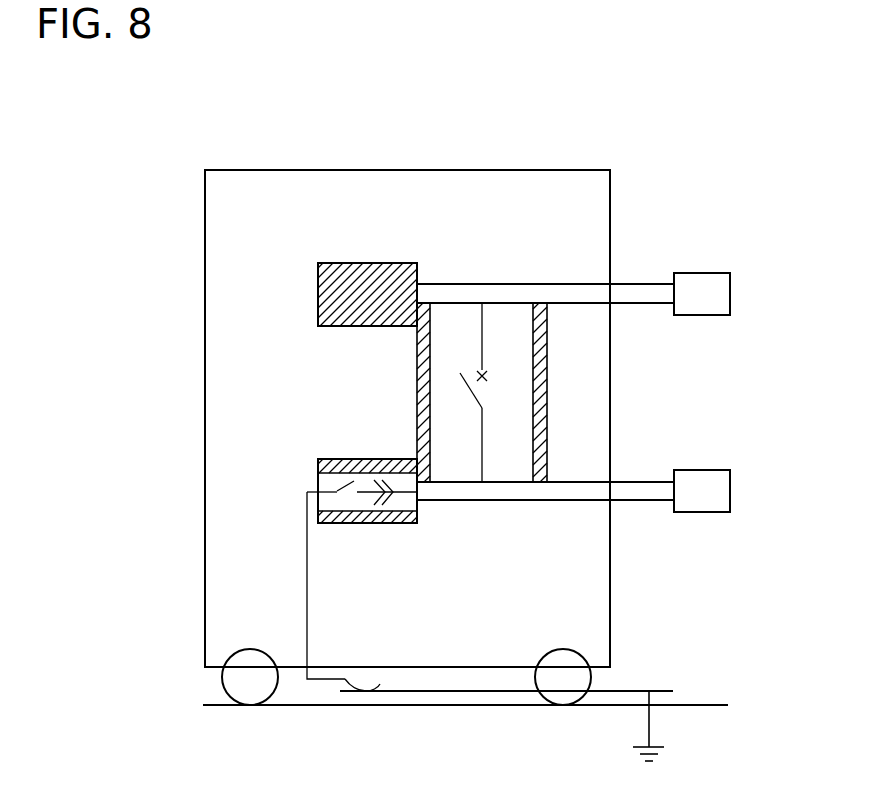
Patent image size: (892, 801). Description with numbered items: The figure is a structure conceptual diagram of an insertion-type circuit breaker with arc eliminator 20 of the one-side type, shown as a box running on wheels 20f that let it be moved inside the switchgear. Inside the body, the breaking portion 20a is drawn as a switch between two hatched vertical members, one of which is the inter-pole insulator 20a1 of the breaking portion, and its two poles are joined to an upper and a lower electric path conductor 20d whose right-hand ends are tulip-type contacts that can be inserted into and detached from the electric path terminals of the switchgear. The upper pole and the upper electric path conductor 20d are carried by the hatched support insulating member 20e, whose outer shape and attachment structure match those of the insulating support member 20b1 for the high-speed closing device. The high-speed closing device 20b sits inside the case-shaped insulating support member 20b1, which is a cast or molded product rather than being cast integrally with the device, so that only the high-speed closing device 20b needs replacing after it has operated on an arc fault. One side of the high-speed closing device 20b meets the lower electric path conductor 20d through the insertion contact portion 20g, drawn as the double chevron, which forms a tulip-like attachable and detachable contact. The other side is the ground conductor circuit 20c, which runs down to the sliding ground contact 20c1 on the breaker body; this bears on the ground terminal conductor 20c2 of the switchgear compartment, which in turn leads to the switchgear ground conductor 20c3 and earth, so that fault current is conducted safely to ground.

The insertion-type circuit breaker with arc eliminator (one-side type) 20 is at (535, 170).
The breaking portion 20a is at (483, 392).
The inter-pole insulator of breaking portion 20a1 is at (548, 440).
The high-speed closing device 20b is at (372, 492).
The insulating support member for high-speed closing device 20b1 is at (350, 460).
The ground conductor circuit 20c is at (306, 588).
The ground contact 20c1 is at (368, 688).
The ground terminal conductor (switchgear attachment) 20c2 is at (454, 693).
The ground conductor (switchgear attachment) 20c3 is at (652, 732).
The electric path conductor 20d is at (731, 298).
The support insulating member 20e is at (364, 262).
The wheel 20f is at (222, 677).
The insertion contact portion 20g is at (388, 500).